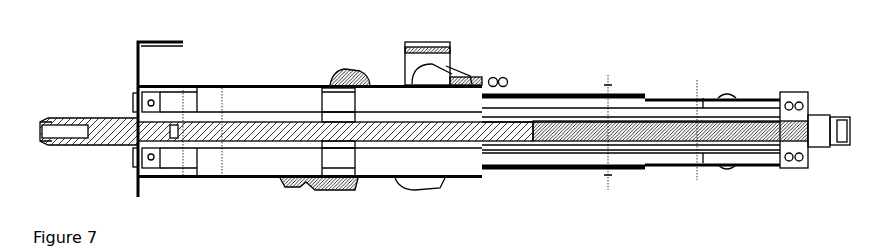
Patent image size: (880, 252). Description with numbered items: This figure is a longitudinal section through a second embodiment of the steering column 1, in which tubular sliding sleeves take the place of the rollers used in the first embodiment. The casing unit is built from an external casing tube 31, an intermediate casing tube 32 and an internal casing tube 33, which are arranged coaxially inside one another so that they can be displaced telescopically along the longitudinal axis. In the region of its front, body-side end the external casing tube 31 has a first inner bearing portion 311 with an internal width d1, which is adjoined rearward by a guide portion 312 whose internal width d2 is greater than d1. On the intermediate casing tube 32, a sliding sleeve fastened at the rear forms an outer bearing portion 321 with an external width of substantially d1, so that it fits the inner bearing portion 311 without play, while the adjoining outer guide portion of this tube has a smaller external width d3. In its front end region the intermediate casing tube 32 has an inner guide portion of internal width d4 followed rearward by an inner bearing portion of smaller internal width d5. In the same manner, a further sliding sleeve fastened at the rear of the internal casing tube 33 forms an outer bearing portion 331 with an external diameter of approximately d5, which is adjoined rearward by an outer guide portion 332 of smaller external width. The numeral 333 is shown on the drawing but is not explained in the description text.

The steering column 1 is at (838, 114).
The external casing tube 31 is at (275, 84).
The first inner bearing portion 311 is at (183, 90).
The guide portion 312 is at (224, 88).
The intermediate casing tube 32 is at (397, 97).
The outer bearing portion 321 is at (410, 58).
The internal casing tube 33 is at (552, 92).
The outer bearing portion 331 is at (608, 80).
The outer guide portion 332 is at (655, 92).
The retaining ring 333 is at (478, 78).
The internal width d1 is at (186, 94).
The internal width d2 is at (240, 86).
The external width d3 is at (612, 85).
The internal width d4 is at (346, 69).
The internal width d5 is at (700, 88).